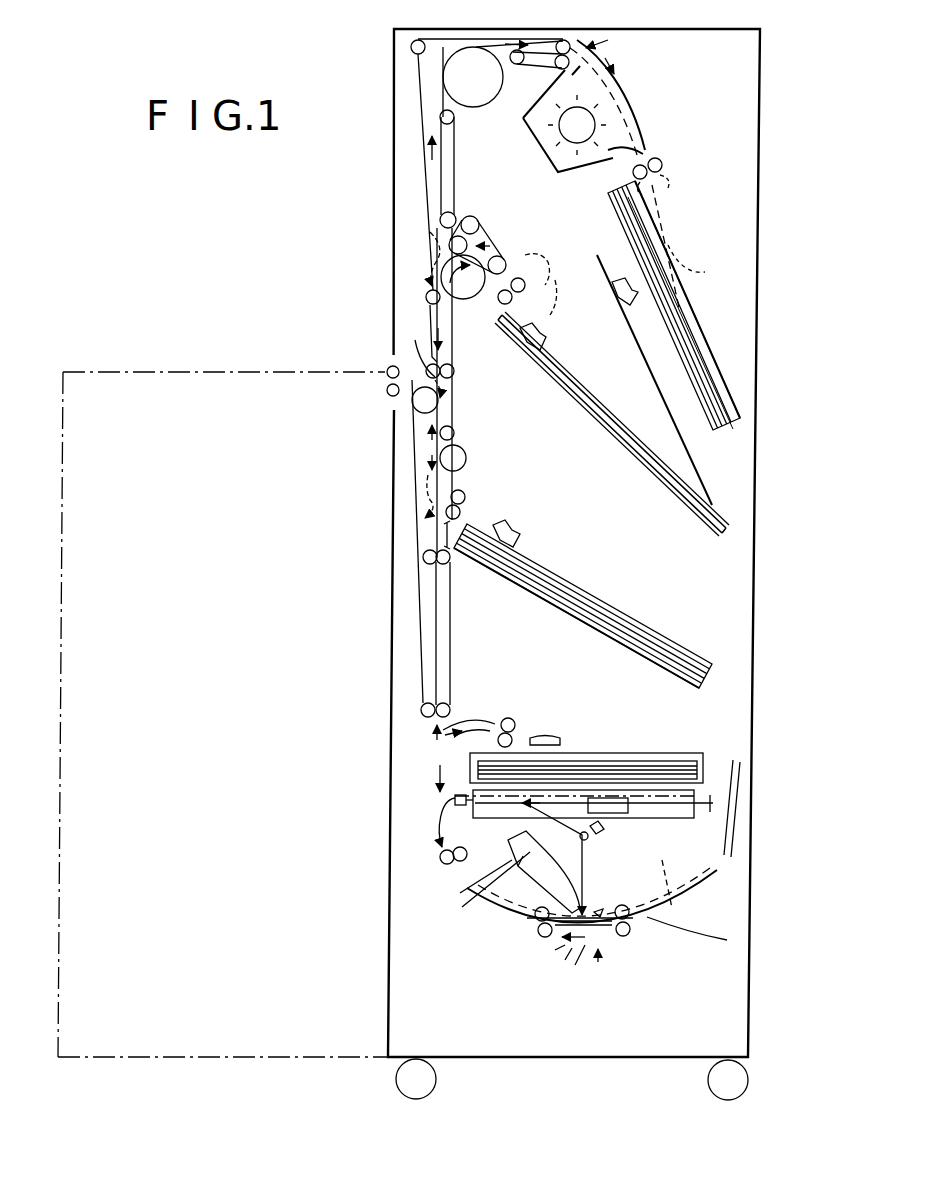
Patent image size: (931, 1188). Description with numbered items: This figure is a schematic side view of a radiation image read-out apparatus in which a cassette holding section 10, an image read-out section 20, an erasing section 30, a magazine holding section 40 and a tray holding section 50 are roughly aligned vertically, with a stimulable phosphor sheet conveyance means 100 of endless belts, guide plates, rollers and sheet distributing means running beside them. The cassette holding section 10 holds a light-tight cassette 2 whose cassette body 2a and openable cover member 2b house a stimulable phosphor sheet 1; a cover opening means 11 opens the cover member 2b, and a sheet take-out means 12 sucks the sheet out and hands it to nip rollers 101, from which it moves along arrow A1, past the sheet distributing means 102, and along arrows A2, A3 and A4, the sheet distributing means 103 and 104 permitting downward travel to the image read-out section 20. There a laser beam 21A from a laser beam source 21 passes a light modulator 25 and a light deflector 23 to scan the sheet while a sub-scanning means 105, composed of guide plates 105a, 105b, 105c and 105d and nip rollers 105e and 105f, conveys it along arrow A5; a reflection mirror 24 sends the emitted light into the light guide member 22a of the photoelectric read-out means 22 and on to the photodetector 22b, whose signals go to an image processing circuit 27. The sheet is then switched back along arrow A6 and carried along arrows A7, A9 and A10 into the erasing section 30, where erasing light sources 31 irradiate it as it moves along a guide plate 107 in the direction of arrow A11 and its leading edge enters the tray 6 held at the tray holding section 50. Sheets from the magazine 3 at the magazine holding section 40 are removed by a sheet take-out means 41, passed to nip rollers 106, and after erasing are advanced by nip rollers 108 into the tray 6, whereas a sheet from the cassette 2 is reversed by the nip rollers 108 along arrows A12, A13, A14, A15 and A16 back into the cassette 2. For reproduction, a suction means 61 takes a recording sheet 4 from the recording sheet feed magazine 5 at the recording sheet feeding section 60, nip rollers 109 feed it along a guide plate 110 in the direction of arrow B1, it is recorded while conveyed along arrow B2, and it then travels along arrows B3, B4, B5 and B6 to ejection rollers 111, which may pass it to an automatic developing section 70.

The stimulable phosphor sheet 1 is at (620, 440).
The cassette 2 is at (695, 540).
The cassette body 2a is at (672, 505).
The cover member 2b is at (720, 505).
The magazine 3 is at (578, 617).
The recording sheet 4 is at (615, 755).
The recording sheet feed magazine 5 is at (655, 755).
The tray 6 is at (740, 425).
The cassette holding section 10 is at (566, 426).
The cover opening means 11 is at (612, 293).
The stimulable phosphor sheet take-out means 12 is at (548, 344).
The image read-out section 20 is at (722, 900).
The He-Ne laser beam source 21 is at (665, 822).
The laser beam 21A is at (585, 883).
The photoelectric read-out means 22 is at (500, 877).
The light guide member 22a is at (498, 898).
The photodetector 22b is at (440, 858).
The light deflector 23 is at (596, 832).
The reflection mirror 24 is at (602, 915).
The light modulator 25 is at (632, 822).
The image processing circuit 27 is at (452, 800).
The erasing section 30 is at (578, 176).
The erasing light source 31 is at (540, 130).
The magazine holding section 40 is at (708, 645).
The sheet take-out means 41 is at (525, 530).
The tray holding section 50 is at (745, 352).
The recording sheet feeding section 60 is at (712, 738).
The suction means 61 is at (560, 738).
The automatic developing section 70 is at (252, 633).
The stimulable phosphor sheet conveyance means 100 is at (410, 193).
The nip rollers 101 is at (508, 280).
The sheet distributing means 102 is at (432, 242).
The sheet distributing means 103 is at (400, 355).
The sheet distributing means 104 is at (430, 500).
The sub-scanning means 105 is at (598, 962).
The guide plate 105a is at (536, 925).
The guide plate 105b is at (625, 937).
The guide plate 105c is at (735, 938).
The guide plate 105d is at (738, 805).
The nip rollers 105e is at (544, 937).
The nip rollers 105f is at (630, 920).
The nip rollers 106 is at (465, 496).
The guide plate 107 is at (630, 100).
The nip rollers 108 is at (660, 158).
The nip rollers 109 is at (516, 722).
The guide plate 110 is at (470, 720).
The ejection rollers 111 is at (387, 390).
The arrow A1 is at (478, 236).
The arrow A2 is at (441, 278).
The arrow A3 is at (399, 471).
The arrow A4 is at (425, 790).
The arrow A5 is at (513, 1002).
The arrow A6 is at (575, 965).
The arrow A7 is at (396, 718).
The arrow A9 is at (432, 155).
The arrow A10 is at (516, 40).
The arrow A11 is at (612, 62).
The arrow A12 is at (606, 40).
The arrow A13 is at (437, 66).
The arrow A14 is at (420, 336).
The arrow A15 is at (430, 478).
The arrow A16 is at (426, 300).
The arrow B1 is at (486, 726).
The arrow B2 is at (545, 981).
The arrow B3 is at (603, 990).
The arrow B4 is at (425, 723).
The arrow B5 is at (432, 433).
The arrow B6 is at (452, 379).